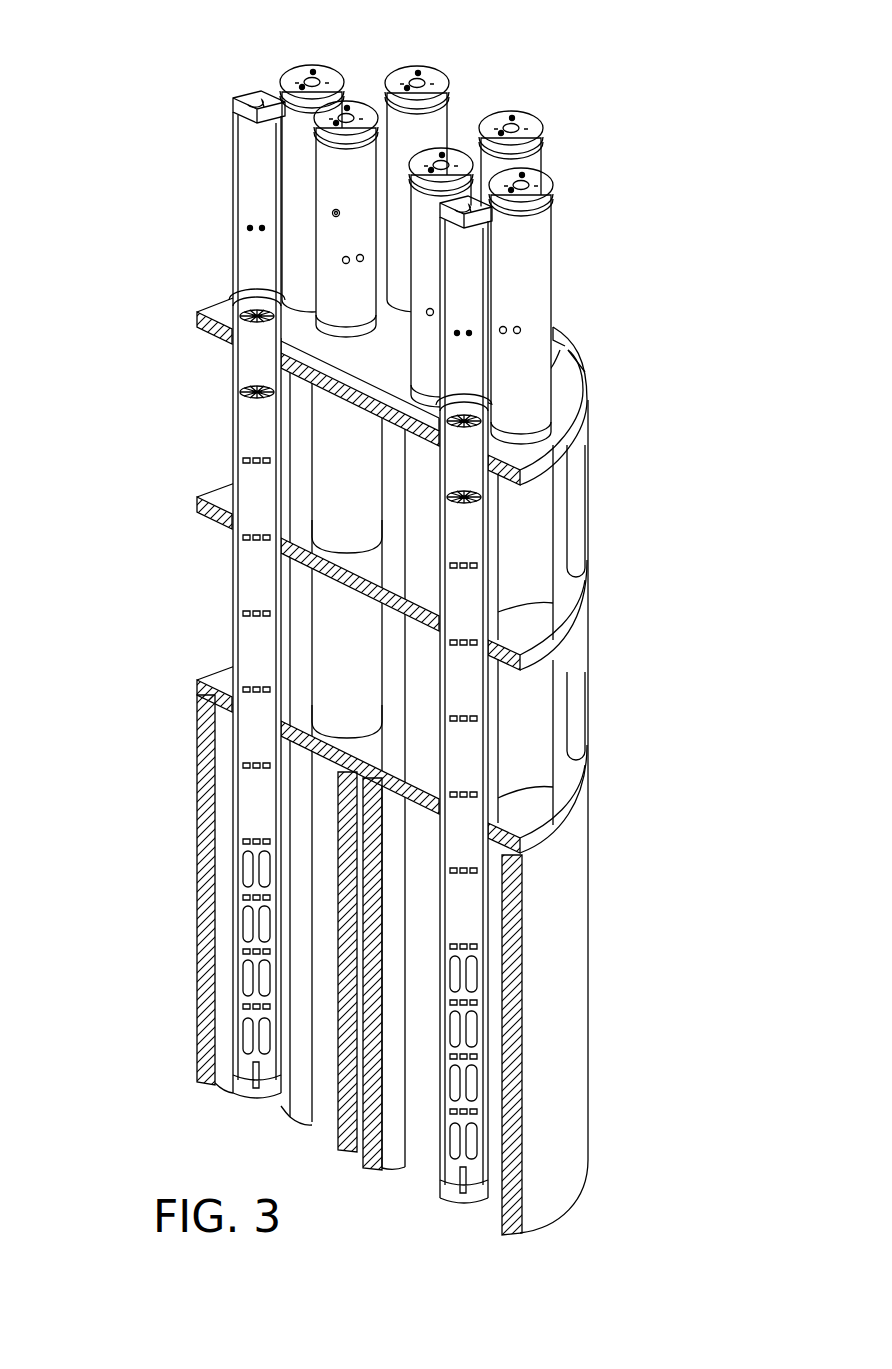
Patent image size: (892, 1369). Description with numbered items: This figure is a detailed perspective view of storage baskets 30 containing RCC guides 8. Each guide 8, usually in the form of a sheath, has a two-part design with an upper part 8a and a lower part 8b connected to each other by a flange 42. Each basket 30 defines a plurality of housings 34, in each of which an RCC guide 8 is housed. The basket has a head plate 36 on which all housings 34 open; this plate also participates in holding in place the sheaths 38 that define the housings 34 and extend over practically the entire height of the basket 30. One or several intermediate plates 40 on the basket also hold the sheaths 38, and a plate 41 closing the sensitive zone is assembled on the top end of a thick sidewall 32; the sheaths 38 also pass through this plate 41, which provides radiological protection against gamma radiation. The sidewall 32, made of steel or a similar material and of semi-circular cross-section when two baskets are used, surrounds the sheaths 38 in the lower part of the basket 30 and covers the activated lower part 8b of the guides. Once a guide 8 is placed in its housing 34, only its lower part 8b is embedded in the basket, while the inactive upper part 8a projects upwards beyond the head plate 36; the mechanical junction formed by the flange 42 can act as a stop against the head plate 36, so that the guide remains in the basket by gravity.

The RCC guide 8 is at (528, 118).
The upper part of the RCC guide 8a is at (250, 133).
The lower part of the RCC guide 8b is at (255, 803).
The storage basket 30 is at (198, 936).
The sidewall 32 is at (515, 1123).
The housing 34 is at (243, 340).
The head plate 36 is at (523, 457).
The sheath 38 is at (357, 667).
The intermediate plate 40 is at (533, 623).
The plate closing the sensitive zone 41 is at (530, 805).
The flange 42 is at (313, 300).